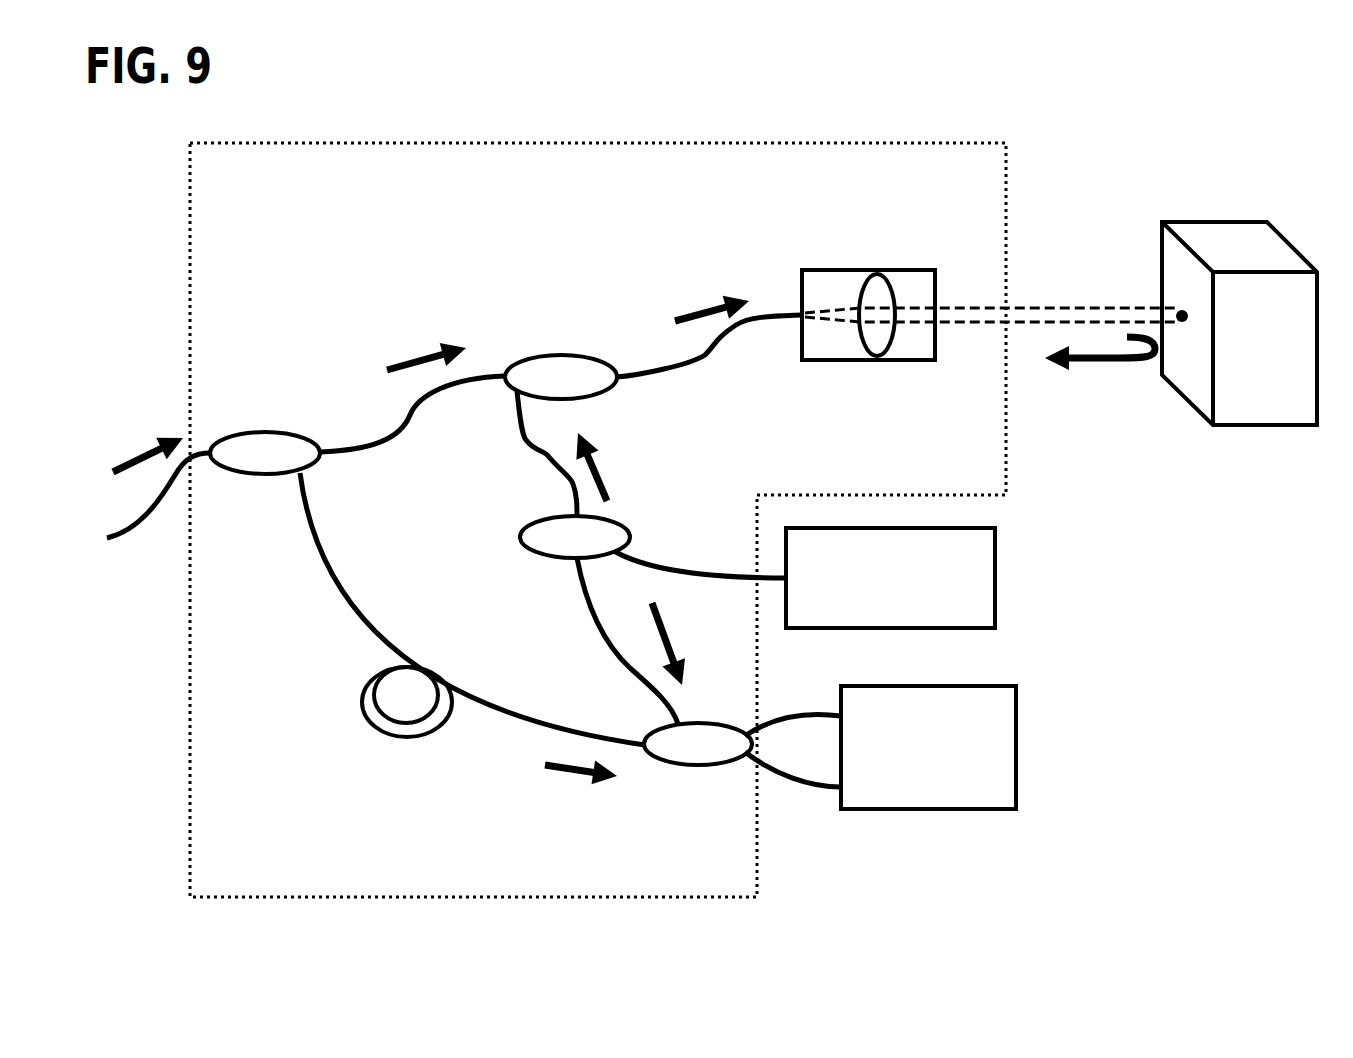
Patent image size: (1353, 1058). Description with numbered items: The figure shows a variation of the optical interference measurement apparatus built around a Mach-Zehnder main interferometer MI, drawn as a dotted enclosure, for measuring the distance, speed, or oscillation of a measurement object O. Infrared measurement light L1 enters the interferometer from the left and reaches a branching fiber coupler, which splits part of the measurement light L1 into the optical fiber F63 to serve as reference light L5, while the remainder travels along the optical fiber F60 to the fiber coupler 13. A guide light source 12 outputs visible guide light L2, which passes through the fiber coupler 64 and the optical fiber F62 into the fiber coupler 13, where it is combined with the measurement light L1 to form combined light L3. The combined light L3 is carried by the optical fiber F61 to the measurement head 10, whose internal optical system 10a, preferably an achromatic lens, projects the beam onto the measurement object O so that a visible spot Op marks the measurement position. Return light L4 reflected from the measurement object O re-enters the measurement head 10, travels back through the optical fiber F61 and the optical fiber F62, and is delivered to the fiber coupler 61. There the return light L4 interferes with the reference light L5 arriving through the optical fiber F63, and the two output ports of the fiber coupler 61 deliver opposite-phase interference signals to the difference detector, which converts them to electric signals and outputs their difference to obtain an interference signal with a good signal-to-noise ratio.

The main interferometer MI is at (190, 200).
The fiber coupler 13 is at (556, 355).
The fiber coupler 64 is at (543, 545).
The fiber coupler 61 is at (693, 755).
The guide light source 12 is at (996, 587).
The measurement head 10 is at (915, 270).
The optical system 10a is at (876, 282).
The measurement object O is at (1237, 236).
The spot Op is at (1178, 314).
The optical fiber F60 is at (412, 441).
The optical fiber F61 is at (709, 368).
The optical fiber F62 is at (516, 454).
The optical fiber F63 is at (437, 609).
The measurement light L1 is at (286, 393).
The guide light L2 is at (618, 467).
The combined light L3 is at (708, 291).
The return light L4 is at (903, 511).
The reference light L5 is at (571, 790).